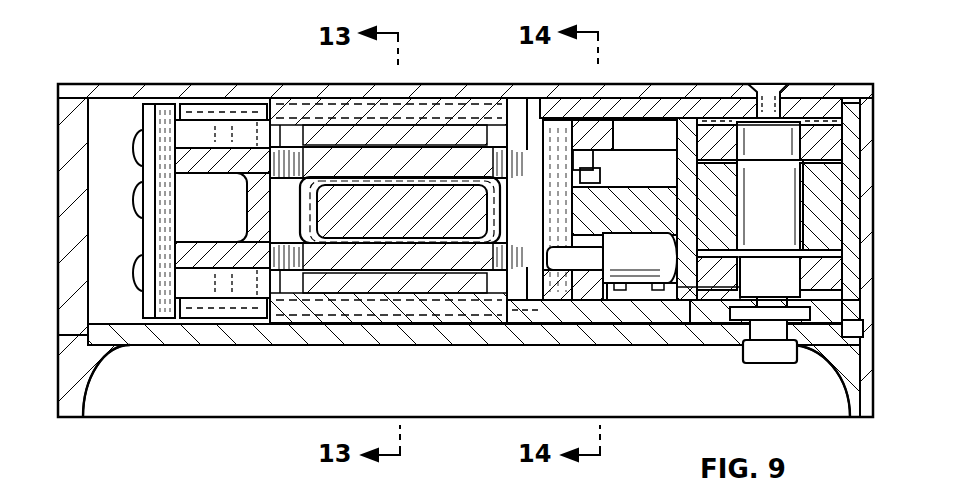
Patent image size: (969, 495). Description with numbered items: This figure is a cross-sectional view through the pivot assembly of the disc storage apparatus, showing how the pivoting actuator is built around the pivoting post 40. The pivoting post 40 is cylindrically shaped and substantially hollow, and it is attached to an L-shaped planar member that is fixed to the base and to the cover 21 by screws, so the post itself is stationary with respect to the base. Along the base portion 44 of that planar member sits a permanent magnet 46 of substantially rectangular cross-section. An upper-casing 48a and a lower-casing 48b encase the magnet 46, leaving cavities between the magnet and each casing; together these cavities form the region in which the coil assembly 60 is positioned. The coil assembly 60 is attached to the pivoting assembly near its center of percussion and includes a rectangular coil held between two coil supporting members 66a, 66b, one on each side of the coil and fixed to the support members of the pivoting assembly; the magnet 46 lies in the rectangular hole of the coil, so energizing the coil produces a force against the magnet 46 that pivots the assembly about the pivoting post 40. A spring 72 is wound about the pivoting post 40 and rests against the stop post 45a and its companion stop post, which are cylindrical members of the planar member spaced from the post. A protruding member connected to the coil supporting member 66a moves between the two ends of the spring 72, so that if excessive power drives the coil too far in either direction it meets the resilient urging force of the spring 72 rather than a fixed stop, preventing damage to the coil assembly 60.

The cover 21 is at (240, 84).
The pivoting post 40 is at (857, 103).
The base portion 44 is at (387, 220).
The stop post 45a is at (616, 150).
The permanent magnet 46 is at (338, 243).
The upper-casing 48a is at (430, 103).
The lower-casing 48b is at (445, 318).
The coil assembly 60 is at (418, 262).
The coil supporting member 66a is at (588, 293).
The coil supporting member 66b is at (253, 258).
The spring 72 is at (663, 153).